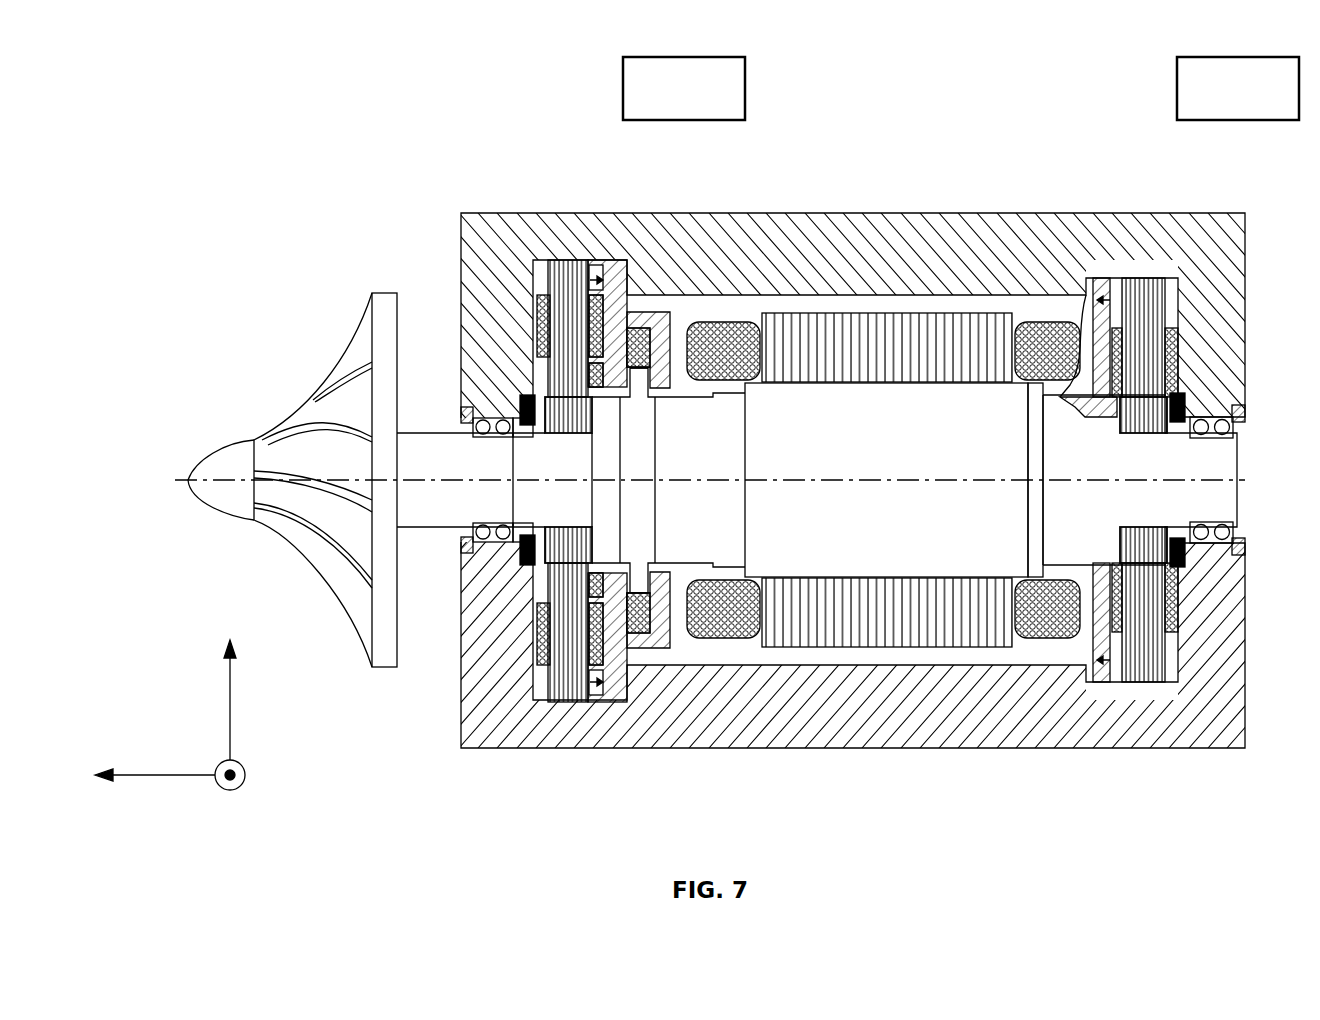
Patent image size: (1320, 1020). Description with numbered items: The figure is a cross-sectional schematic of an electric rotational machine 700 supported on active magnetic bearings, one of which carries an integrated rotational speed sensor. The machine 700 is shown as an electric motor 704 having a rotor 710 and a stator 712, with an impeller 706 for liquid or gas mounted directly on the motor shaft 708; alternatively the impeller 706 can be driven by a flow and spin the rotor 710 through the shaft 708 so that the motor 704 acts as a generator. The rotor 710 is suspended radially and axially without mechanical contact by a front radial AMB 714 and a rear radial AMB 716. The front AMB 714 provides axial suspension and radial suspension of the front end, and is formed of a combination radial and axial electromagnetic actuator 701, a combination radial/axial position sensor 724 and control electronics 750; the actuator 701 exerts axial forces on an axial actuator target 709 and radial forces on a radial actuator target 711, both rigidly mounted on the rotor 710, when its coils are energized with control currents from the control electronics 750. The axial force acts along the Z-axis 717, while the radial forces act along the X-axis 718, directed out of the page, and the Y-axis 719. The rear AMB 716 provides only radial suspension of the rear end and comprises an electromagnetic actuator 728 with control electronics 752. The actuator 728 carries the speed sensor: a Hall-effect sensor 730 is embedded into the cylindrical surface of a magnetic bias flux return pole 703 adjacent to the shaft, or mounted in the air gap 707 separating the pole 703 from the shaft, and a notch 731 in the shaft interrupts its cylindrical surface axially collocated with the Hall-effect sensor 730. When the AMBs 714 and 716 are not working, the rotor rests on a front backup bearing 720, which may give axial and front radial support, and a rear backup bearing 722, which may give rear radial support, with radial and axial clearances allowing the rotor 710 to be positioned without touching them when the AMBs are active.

The electric rotational machine 700 is at (326, 196).
The combination radial and axial electromagnetic actuator 701 is at (565, 255).
The magnetic bias flux return pole 703 is at (1100, 250).
The electric motor 704 is at (765, 225).
The impeller 706 is at (293, 443).
The air gap 707 is at (1065, 405).
The motor shaft 708 is at (455, 515).
The axial actuator target 709 is at (640, 630).
The rotor 710 is at (870, 555).
The radial actuator target 711 is at (527, 565).
The stator 712 is at (935, 625).
The front radial AMB 714 is at (598, 255).
The rear radial AMB 716 is at (1145, 275).
The Z-axis 717 is at (168, 822).
The X-axis 718 is at (318, 797).
The Y-axis 719 is at (300, 667).
The front backup bearing 720 is at (490, 418).
The rear backup bearing 722 is at (1212, 418).
The combination radial/axial position sensor 724 is at (520, 410).
The electromagnetic actuator 728 is at (1190, 300).
The Hall-effect sensor 730 is at (1182, 390).
The notch 731 is at (1080, 400).
The control electronics 750 is at (675, 255).
The control electronics 752 is at (1152, 257).